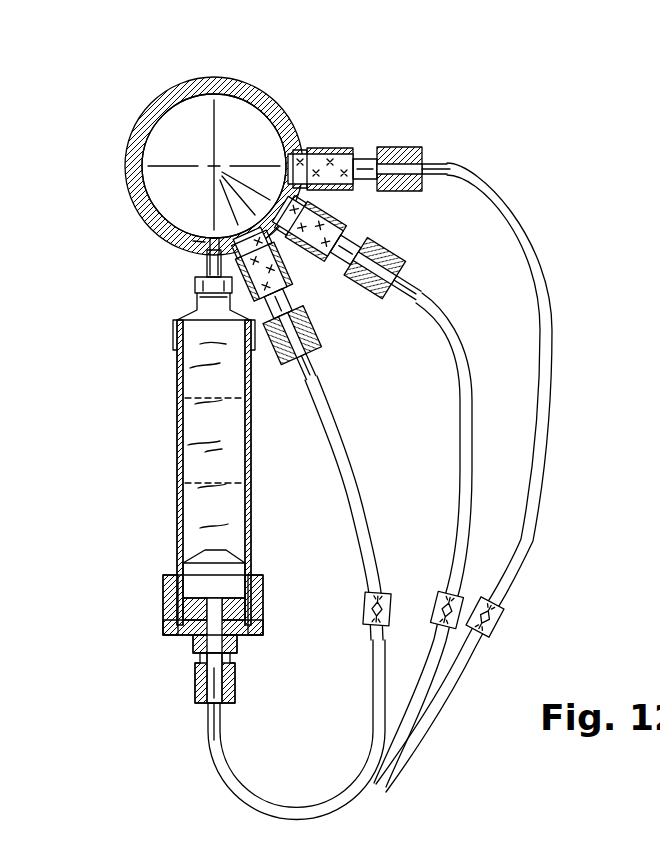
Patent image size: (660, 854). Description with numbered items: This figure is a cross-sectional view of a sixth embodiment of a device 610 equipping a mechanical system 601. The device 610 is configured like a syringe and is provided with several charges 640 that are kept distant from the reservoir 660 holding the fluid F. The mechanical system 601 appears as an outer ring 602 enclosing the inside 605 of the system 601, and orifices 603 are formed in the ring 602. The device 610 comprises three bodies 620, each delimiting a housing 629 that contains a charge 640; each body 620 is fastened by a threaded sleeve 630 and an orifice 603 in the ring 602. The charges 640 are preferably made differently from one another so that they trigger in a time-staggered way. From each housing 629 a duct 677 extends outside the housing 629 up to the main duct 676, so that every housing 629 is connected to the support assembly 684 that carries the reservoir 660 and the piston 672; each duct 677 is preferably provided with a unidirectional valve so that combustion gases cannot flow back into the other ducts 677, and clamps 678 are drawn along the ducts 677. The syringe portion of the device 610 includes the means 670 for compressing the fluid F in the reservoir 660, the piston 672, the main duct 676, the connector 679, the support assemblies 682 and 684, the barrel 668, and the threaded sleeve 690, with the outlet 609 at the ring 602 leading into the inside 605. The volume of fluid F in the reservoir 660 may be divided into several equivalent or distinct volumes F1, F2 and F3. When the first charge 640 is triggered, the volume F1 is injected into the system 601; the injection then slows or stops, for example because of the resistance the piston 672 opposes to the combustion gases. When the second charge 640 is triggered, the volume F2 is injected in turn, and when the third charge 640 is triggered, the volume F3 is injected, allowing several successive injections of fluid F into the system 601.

The mechanical system 601 is at (205, 155).
The outer ring 602 is at (133, 116).
The orifice 603 is at (281, 97).
The inside of the system 605 is at (232, 118).
The reservoir outlet 609 is at (190, 242).
The device 610 is at (202, 476).
The body 620 is at (410, 305).
The housing 629 is at (375, 156).
The threaded sleeve 630 is at (303, 130).
The charge 640 is at (343, 147).
The reservoir 660 is at (247, 498).
The syringe barrel 668 is at (178, 312).
The means for compressing the fluid 670 is at (257, 730).
The piston 672 is at (206, 558).
The main duct 676 is at (258, 806).
The duct 677 is at (540, 453).
The clamps 678 is at (480, 597).
The connector 679 is at (230, 677).
The support assembly 682 is at (196, 286).
The support assembly 684 is at (237, 607).
The threaded sleeve 690 is at (205, 252).
The fluid F is at (182, 438).
The first volume of fluid F1 is at (232, 383).
The second volume of fluid F2 is at (257, 447).
The third volume of fluid F3 is at (248, 533).